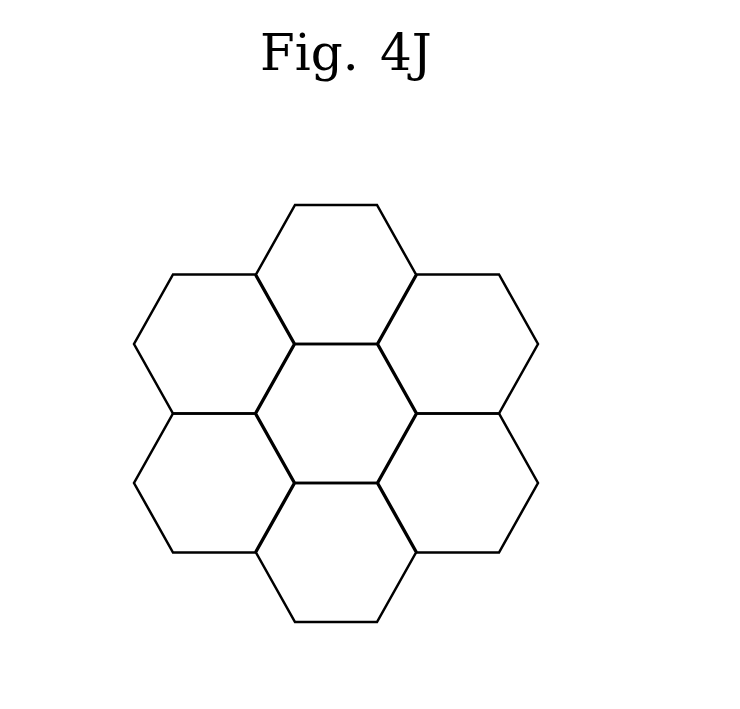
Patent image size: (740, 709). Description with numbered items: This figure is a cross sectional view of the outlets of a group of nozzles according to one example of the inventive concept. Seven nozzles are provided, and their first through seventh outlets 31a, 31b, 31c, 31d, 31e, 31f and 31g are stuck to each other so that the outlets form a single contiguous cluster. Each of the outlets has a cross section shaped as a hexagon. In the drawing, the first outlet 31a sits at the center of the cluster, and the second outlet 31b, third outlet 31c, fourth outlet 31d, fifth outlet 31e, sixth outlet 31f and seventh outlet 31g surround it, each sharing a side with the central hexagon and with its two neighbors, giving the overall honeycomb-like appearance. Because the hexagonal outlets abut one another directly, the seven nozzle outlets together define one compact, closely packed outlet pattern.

The first outlet 31a is at (383, 396).
The second outlet 31b is at (538, 483).
The third outlet 31c is at (538, 343).
The fourth outlet 31d is at (335, 205).
The fifth outlet 31e is at (134, 343).
The sixth outlet 31f is at (134, 483).
The seventh outlet 31g is at (335, 623).